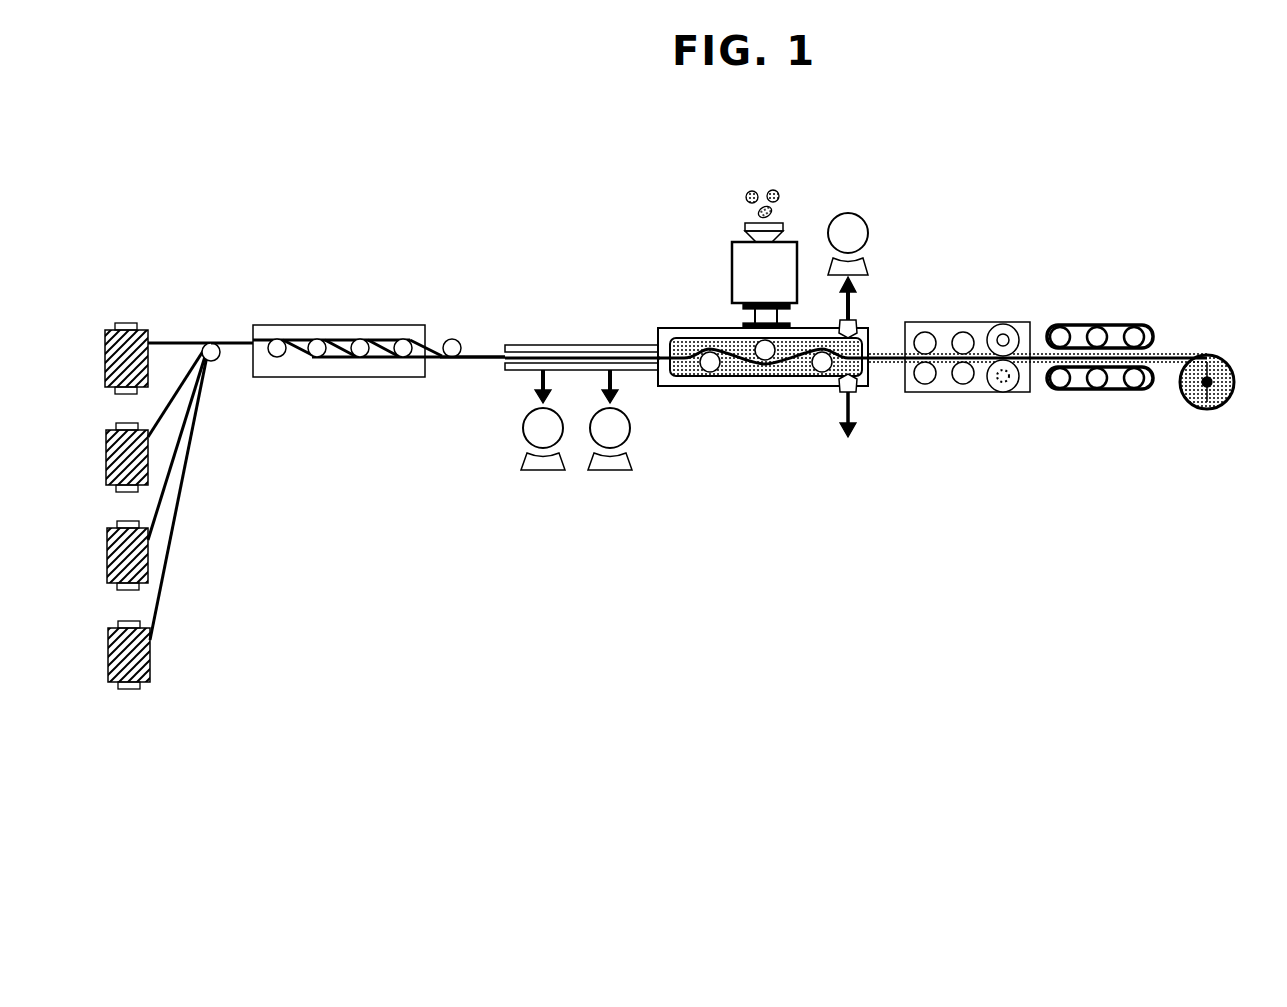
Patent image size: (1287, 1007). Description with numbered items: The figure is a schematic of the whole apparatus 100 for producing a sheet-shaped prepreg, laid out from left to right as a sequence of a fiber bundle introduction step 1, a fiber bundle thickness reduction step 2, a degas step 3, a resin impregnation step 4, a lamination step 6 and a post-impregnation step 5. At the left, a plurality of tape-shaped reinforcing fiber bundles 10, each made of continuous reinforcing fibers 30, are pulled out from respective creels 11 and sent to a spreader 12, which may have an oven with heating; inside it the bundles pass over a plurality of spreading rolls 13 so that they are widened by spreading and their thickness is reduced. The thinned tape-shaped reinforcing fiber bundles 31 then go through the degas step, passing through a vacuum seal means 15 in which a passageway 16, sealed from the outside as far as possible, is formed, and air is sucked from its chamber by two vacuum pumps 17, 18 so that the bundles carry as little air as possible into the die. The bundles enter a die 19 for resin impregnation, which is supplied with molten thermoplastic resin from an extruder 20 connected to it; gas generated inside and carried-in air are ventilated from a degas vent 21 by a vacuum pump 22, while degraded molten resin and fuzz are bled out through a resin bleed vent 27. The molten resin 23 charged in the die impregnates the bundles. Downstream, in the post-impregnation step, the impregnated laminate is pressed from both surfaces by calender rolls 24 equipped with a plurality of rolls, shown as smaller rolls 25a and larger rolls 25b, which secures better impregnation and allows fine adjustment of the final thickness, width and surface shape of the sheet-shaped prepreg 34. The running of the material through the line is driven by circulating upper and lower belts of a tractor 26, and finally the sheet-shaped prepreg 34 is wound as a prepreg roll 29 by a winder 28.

The apparatus for producing a sheet shaped prepreg 100 is at (219, 280).
The tape-shaped reinforcing fiber bundle 10 is at (242, 328).
The creel 11 is at (122, 393).
The continuous reinforcing fiber 30 is at (118, 348).
The spreader 12 is at (358, 322).
The spreading roll 13 is at (356, 362).
The tape-shaped reinforcing fiber bundle reduced in thickness 31 is at (483, 343).
The vacuum seal means 15 is at (622, 345).
The passageway 16 is at (571, 356).
The vacuum pump 17 is at (540, 460).
The vacuum pump 18 is at (610, 462).
The extruder 20 is at (733, 242).
The vacuum pump 22 is at (840, 215).
The degas vent 21 is at (858, 318).
The die 19 is at (688, 386).
The molten resin 23 is at (733, 375).
The resin bleed vent 27 is at (862, 392).
The calender rolls 24 is at (957, 318).
The pressing rollers 25a is at (963, 378).
The driving rollers 25b is at (1015, 338).
The tractor 26 is at (1085, 325).
The sheet-shaped prepreg 34 is at (1172, 352).
The winder 28 is at (1220, 360).
The prepreg roll 29 is at (1203, 405).
The fiber bundle introduction step 1 is at (656, 729).
The fiber bundle thickness reduction step 2 is at (899, 768).
The degas step 3 is at (642, 223).
The resin impregnation step 4 is at (777, 729).
The lamination step 6 is at (867, 729).
The post-impregnation step 5 is at (1041, 729).